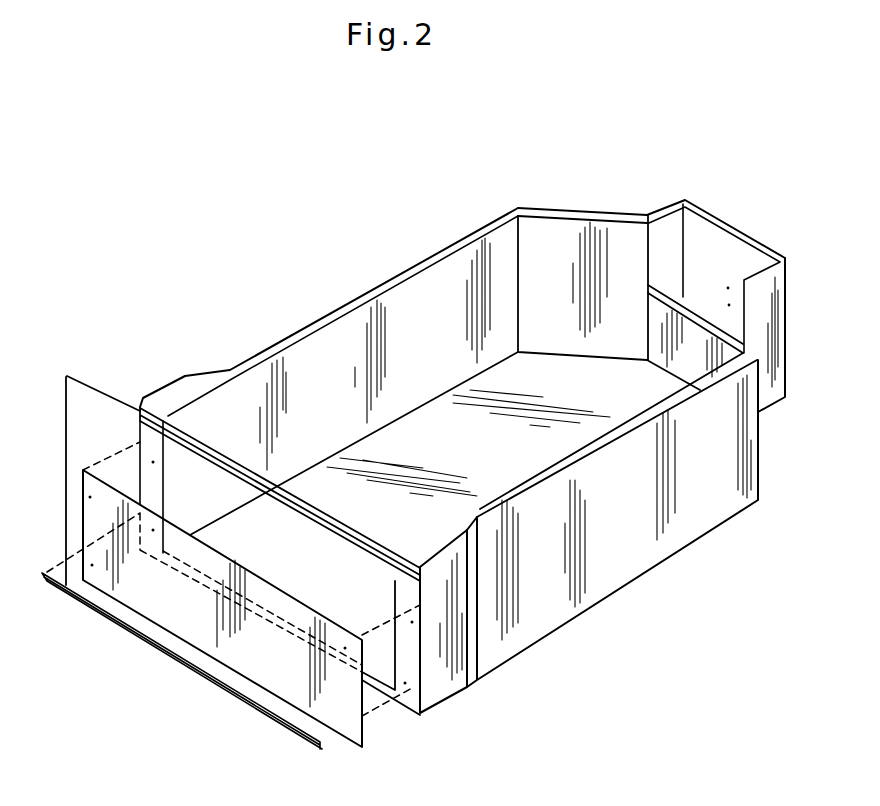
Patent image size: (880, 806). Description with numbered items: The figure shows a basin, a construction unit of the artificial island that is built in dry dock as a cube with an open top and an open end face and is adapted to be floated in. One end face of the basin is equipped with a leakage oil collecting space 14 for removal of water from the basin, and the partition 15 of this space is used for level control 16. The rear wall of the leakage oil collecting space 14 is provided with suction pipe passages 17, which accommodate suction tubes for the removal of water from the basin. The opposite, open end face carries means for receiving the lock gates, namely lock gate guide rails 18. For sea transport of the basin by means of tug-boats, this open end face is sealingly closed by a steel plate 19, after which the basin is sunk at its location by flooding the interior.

The leakage oil collecting space 14 is at (722, 310).
The partition 15 is at (662, 337).
The level control 16 is at (656, 292).
The suction pipe passages 17 is at (705, 272).
The lock gate guide rails 18 is at (180, 374).
The steel plate 19 is at (213, 637).